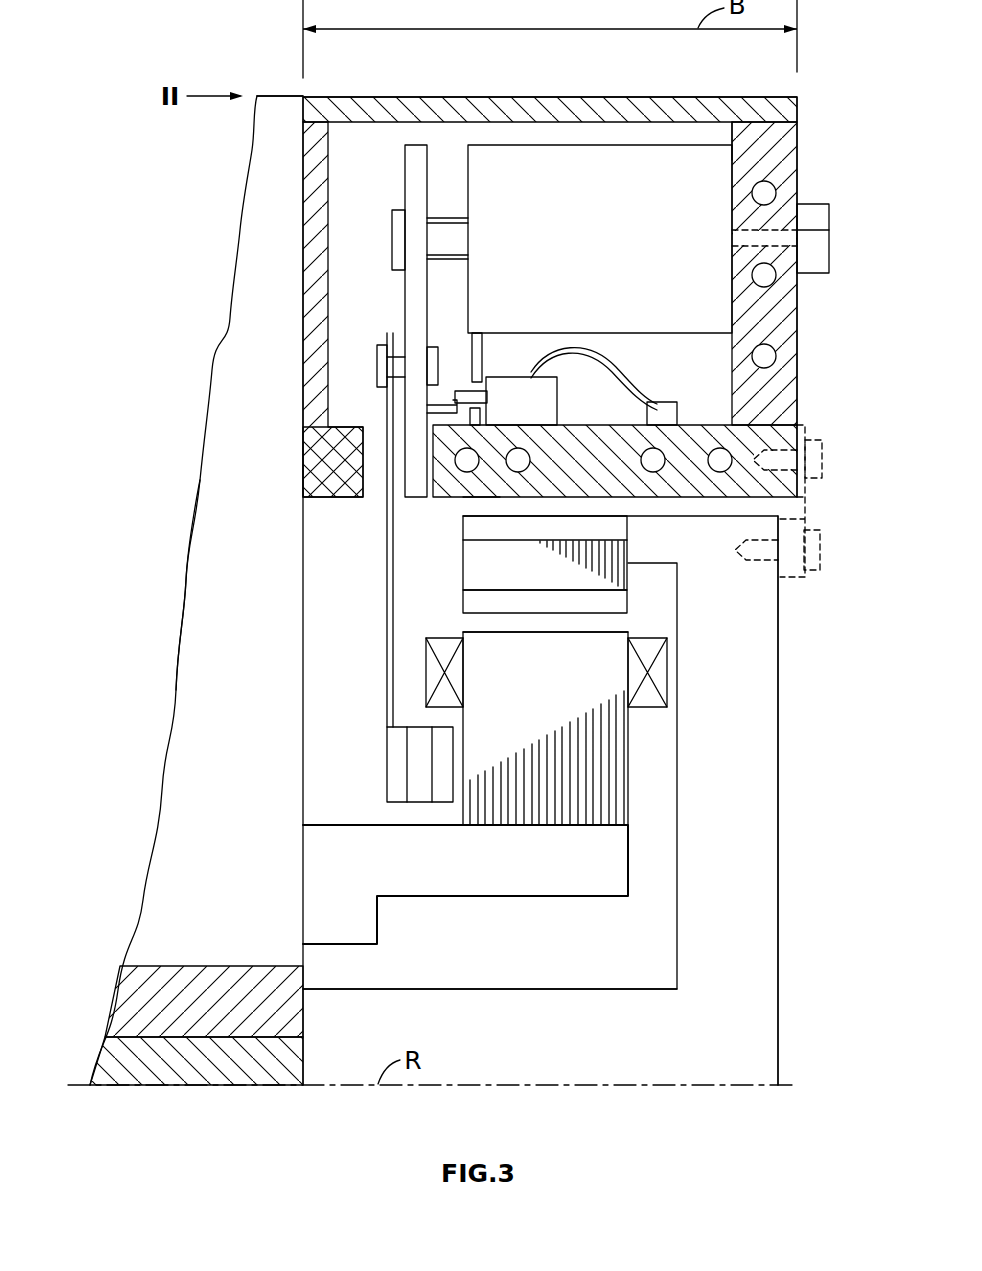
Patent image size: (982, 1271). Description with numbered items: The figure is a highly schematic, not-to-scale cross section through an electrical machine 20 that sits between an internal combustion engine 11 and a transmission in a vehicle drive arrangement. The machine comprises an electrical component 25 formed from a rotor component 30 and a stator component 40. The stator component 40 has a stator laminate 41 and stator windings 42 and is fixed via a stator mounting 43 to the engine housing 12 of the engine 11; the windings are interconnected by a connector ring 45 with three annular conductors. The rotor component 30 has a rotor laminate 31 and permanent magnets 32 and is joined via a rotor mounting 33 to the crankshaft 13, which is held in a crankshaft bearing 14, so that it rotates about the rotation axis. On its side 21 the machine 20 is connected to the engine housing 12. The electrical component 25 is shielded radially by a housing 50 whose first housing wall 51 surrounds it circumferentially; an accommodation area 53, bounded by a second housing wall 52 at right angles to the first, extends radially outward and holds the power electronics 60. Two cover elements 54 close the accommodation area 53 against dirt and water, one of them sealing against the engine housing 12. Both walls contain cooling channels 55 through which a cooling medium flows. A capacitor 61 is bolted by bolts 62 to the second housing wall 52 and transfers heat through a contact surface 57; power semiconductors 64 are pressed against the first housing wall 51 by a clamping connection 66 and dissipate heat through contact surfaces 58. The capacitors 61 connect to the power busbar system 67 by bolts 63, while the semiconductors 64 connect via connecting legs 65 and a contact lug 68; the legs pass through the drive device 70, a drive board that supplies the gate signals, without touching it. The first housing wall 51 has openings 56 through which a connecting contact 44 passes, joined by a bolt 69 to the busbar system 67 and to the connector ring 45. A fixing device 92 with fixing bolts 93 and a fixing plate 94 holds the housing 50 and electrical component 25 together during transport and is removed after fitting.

The engine 11 is at (180, 502).
The engine housing 12 is at (198, 592).
The crankshaft 13 is at (100, 1046).
The crankshaft bearing 14 is at (112, 998).
The electrical machine 20 is at (818, 106).
The side 21 is at (298, 330).
The electrical component 25 is at (810, 730).
The rotor component 30 is at (786, 640).
The rotor laminate 31 is at (463, 572).
The permanent magnets 32 is at (463, 606).
The rotor mounting 33 is at (780, 906).
The stator component 40 is at (577, 912).
The stator laminate 41 is at (628, 790).
The stator windings 42 is at (460, 668).
The stator mounting 43 is at (423, 896).
The connecting contact 44 is at (387, 647).
The connector ring 45 is at (387, 776).
The housing 50 is at (636, 86).
The first housing wall 51 is at (722, 432).
The second housing wall 52 is at (790, 336).
The accommodation area 53 is at (515, 260).
The cover elements 54 is at (508, 97).
The cooling channels 55 is at (772, 190).
The openings 56 is at (582, 432).
The contact surface 57 is at (748, 158).
The contact surfaces 58 is at (476, 498).
The power electronics 60 is at (392, 306).
The capacitors 61 is at (696, 333).
The bolts 62 is at (818, 207).
The bolts 63 is at (456, 220).
The power semiconductors 64 is at (498, 378).
The connecting legs 65 is at (464, 394).
The clamping connection 66 is at (598, 357).
The power busbar system 67 is at (428, 288).
The contact lug 68 is at (437, 412).
The bolt 69 is at (377, 354).
The drive device 70 is at (484, 350).
The fixing device 92 is at (834, 430).
The fixing bolts 93 is at (822, 463).
The fixing plate 94 is at (812, 500).